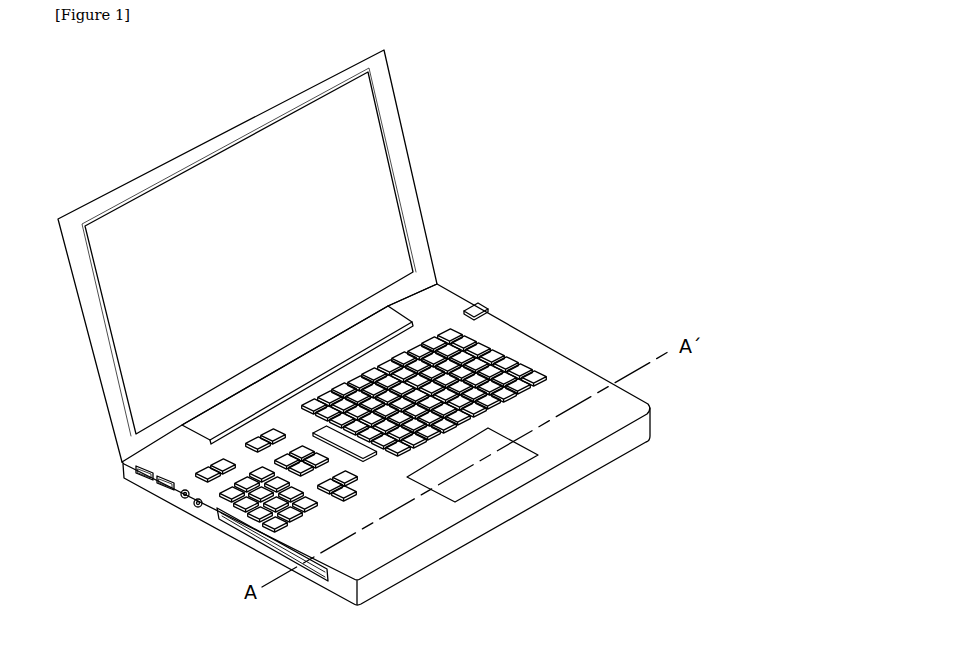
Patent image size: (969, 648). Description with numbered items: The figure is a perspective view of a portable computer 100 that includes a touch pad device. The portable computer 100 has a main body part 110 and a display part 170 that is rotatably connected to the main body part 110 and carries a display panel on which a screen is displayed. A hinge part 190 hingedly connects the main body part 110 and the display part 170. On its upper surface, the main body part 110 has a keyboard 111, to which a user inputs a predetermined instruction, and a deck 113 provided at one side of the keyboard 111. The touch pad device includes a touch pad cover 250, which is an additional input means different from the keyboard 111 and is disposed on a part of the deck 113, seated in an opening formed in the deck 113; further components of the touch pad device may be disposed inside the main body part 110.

The portable computer 100 is at (354, 327).
The main body part 110 is at (386, 430).
The keyboard 111 is at (519, 336).
The deck 113 is at (573, 381).
The display part 170 is at (408, 166).
The hinge part 190 is at (396, 318).
The touch pad cover 250 is at (489, 476).